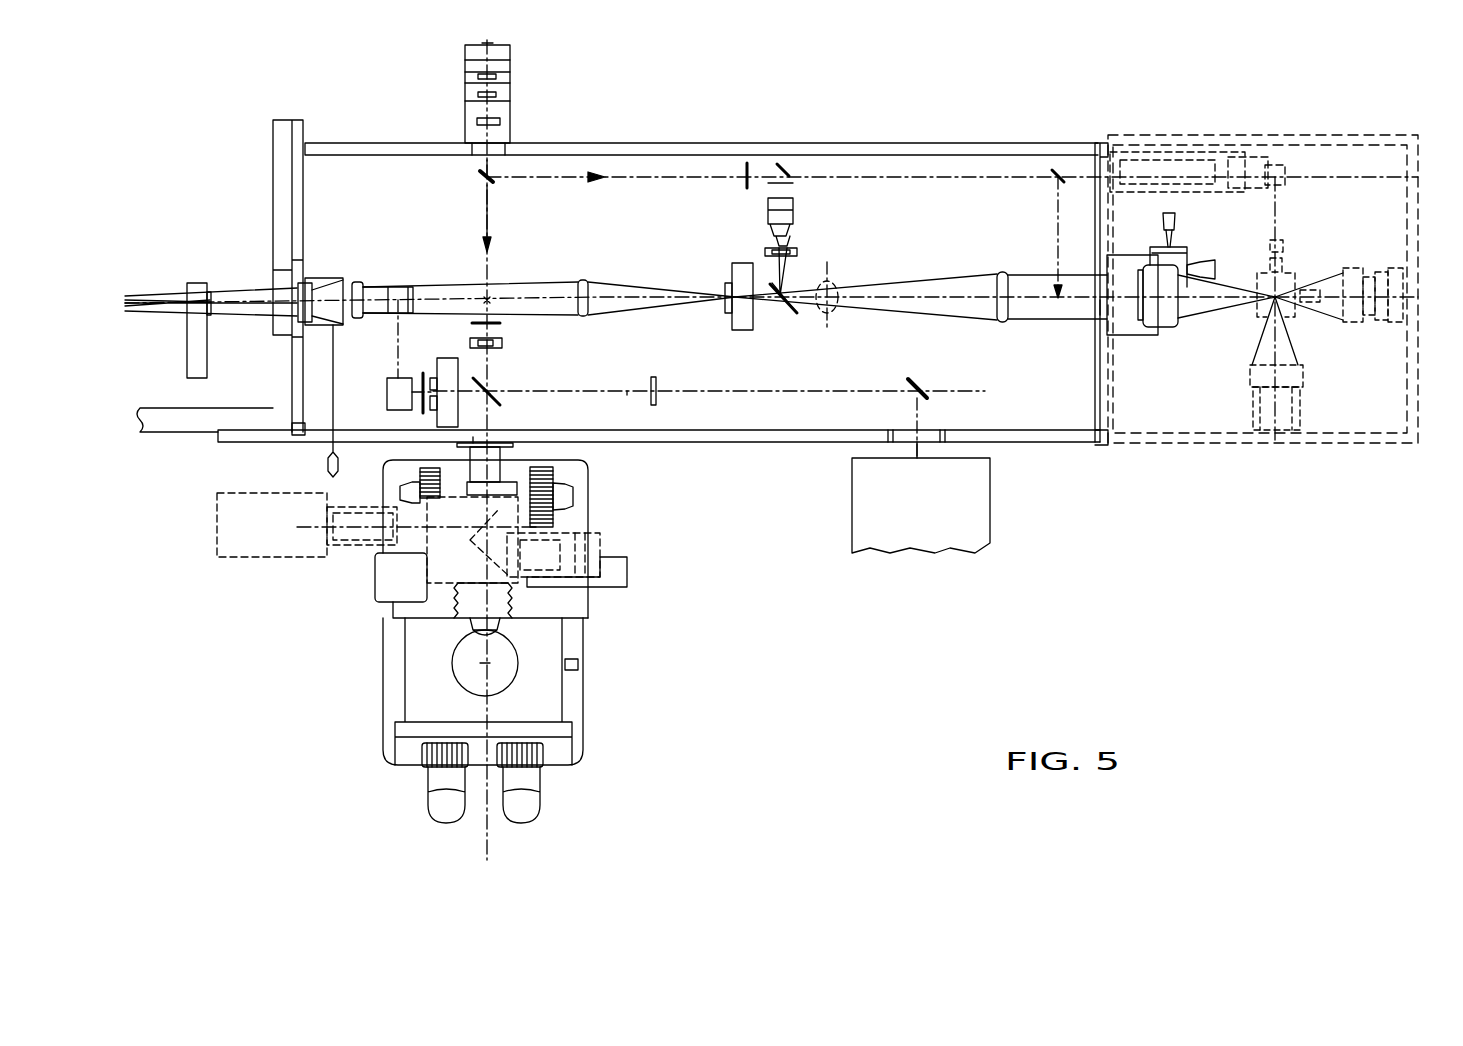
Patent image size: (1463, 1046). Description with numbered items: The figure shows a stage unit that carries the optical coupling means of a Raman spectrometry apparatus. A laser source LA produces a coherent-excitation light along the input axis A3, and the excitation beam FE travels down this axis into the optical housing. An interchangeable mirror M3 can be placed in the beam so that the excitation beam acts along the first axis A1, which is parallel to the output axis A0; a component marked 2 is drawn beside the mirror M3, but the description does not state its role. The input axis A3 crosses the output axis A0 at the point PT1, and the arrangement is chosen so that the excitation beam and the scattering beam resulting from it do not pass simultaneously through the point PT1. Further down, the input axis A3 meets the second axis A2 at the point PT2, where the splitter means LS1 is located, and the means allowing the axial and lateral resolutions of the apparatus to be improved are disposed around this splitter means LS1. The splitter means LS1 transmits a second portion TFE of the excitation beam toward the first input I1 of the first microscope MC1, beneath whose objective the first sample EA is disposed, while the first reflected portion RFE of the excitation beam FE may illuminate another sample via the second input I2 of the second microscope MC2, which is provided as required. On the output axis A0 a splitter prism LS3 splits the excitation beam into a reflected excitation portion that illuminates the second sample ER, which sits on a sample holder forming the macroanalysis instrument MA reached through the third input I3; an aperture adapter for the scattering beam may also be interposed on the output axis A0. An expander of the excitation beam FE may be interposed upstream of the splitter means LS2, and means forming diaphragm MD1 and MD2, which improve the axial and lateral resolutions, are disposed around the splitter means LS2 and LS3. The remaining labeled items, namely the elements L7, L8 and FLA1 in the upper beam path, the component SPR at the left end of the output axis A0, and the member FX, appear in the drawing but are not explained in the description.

The laser source LA is at (510, 103).
The laser beam 2 is at (478, 168).
The interchangeable mirror M3 is at (480, 176).
The excitation beam FE is at (489, 243).
The lens L7 is at (742, 180).
The objective lens L8 is at (767, 203).
The flat mirror / field element FLA1 is at (793, 172).
The means forming diaphragm MD1 is at (797, 252).
The means forming diaphragm MD2 is at (747, 328).
The specimen / probe SPR is at (198, 283).
The fixture plate FX is at (273, 288).
The intersection point PT1 is at (488, 298).
The intersection point PT2 is at (489, 390).
The splitter means LS1 is at (495, 398).
The splitter means LS2 is at (793, 315).
The splitter prism LS3 is at (1058, 302).
The output axis A0 is at (789, 286).
The first axis A1 is at (970, 293).
The second axis A2 is at (945, 390).
The input axis A3 is at (504, 459).
The second sample ER is at (1280, 302).
The first input I1 is at (473, 437).
The second input I2 is at (935, 432).
The third input I3 is at (1097, 308).
The second portion of the excitation beam TFE is at (488, 418).
The first reflected portion of the excitation beam RFE is at (627, 393).
The first microscope MC1 is at (588, 498).
The second microscope MC2 is at (852, 513).
The first sample EA is at (490, 666).
The macroanalysis instrument MA is at (1213, 447).